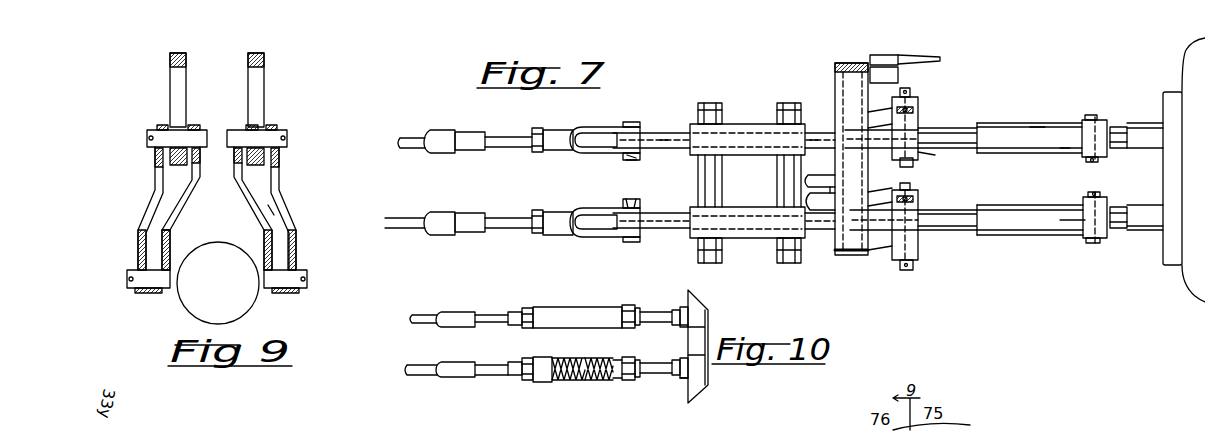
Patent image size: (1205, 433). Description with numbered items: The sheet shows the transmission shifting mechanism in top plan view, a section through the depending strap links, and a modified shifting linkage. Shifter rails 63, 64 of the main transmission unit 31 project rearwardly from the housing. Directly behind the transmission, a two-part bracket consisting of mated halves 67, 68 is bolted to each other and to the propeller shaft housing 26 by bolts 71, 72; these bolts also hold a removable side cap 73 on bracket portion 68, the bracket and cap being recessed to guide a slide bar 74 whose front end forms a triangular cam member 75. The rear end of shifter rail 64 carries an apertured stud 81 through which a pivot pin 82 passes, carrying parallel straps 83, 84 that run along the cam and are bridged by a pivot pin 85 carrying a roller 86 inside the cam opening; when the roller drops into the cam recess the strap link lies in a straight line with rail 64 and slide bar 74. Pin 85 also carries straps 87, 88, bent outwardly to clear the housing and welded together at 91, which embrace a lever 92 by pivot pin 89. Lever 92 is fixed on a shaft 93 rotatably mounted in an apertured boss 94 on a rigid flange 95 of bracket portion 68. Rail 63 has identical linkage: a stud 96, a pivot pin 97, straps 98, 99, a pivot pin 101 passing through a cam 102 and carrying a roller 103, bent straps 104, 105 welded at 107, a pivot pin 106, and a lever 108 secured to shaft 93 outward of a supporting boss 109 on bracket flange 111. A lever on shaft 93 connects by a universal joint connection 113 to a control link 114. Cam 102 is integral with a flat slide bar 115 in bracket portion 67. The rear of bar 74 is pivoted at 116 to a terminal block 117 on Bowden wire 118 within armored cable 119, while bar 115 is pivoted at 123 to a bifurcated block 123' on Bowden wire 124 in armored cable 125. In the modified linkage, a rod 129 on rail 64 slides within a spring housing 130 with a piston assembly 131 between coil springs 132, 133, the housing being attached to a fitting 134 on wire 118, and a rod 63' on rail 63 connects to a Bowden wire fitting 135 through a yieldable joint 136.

In FIG. 9, the propeller shaft housing 26 is at (240, 317).
In FIG. 7, the main transmission unit 31 is at (1192, 283).
In FIG. 10, the main transmission unit 31 is at (700, 392).
In FIG. 7, the shifter rail 63 is at (1136, 126).
In FIG. 10, the shifter rail 63 is at (674, 338).
In FIG. 10, the rearwardly projecting rod 63' is at (664, 303).
In FIG. 7, the shifter rail 64 is at (1152, 230).
In FIG. 10, the shifter rail 64 is at (684, 380).
In FIG. 7, the bracket half 67 is at (697, 165).
In FIG. 7, the bracket half 68 is at (697, 205).
In FIG. 7, the bolt 71 is at (710, 263).
In FIG. 7, the bolt 72 is at (790, 263).
In FIG. 7, the removable side cap 73 is at (752, 238).
In FIG. 7, the slide bar 74 is at (818, 231).
In FIG. 9, the cam member 75 is at (186, 62).
In FIG. 7, the cam member 75 is at (978, 214).
In FIG. 7, the apertured stud 81 is at (1080, 220).
In FIG. 7, the pivot pin 82 is at (1102, 196).
In FIG. 9, the strap 83 is at (182, 132).
In FIG. 7, the strap 83 is at (1034, 210).
In FIG. 9, the strap 84 is at (160, 125).
In FIG. 7, the strap 84 is at (1028, 235).
In FIG. 9, the pivot pin 85 is at (150, 144).
In FIG. 7, the pivot pin 85 is at (918, 262).
In FIG. 9, the roller 86 is at (192, 125).
In FIG. 7, the roller 86 is at (916, 200).
In FIG. 9, the strap 87 is at (155, 190).
In FIG. 7, the strap 87 is at (918, 248).
In FIG. 9, the strap 88 is at (193, 197).
In FIG. 7, the strap 88 is at (912, 190).
In FIG. 9, the pivot pin 89 is at (130, 278).
In FIG. 9, the weld 91 is at (165, 222).
In FIG. 9, the lever 92 is at (153, 293).
In FIG. 7, the lever 92 is at (888, 255).
In FIG. 7, the shaft 93 is at (856, 255).
In FIG. 7, the apertured boss 94 is at (898, 190).
In FIG. 7, the rigid flange 95 is at (822, 193).
In FIG. 7, the apertured stud 96 is at (1100, 154).
In FIG. 7, the pivot pin 97 is at (1098, 108).
In FIG. 9, the strap 98 is at (275, 125).
In FIG. 7, the strap 98 is at (1038, 125).
In FIG. 9, the strap 99 is at (248, 125).
In FIG. 7, the strap 99 is at (1065, 152).
In FIG. 9, the pivot pin 101 is at (284, 141).
In FIG. 7, the pivot pin 101 is at (918, 110).
In FIG. 9, the cam 102 is at (272, 48).
In FIG. 7, the cam 102 is at (975, 128).
In FIG. 9, the roller 103 is at (258, 132).
In FIG. 7, the roller 103 is at (920, 141).
In FIG. 9, the strap 104 is at (280, 180).
In FIG. 7, the strap 104 is at (918, 115).
In FIG. 9, the strap 105 is at (248, 187).
In FIG. 7, the strap 105 is at (922, 160).
In FIG. 9, the pivot pin 106 is at (307, 279).
In FIG. 7, the pivot pin 106 is at (908, 88).
In FIG. 9, the weld 107 is at (274, 205).
In FIG. 9, the lever 108 is at (288, 293).
In FIG. 7, the lever 108 is at (888, 112).
In FIG. 7, the supporting boss 109 is at (868, 160).
In FIG. 7, the bracket flange 111 is at (826, 175).
In FIG. 7, the universal joint connection 113 is at (876, 55).
In FIG. 7, the control link 114 is at (915, 57).
In FIG. 7, the flat slide bar 115 is at (665, 138).
In FIG. 7, the pivotal connection 116 is at (630, 243).
In FIG. 7, the terminal block 117 is at (595, 237).
In FIG. 7, the Bowden wire 118 is at (407, 226).
In FIG. 10, the Bowden wire 118 is at (408, 370).
In FIG. 7, the armored cable 119 is at (450, 232).
In FIG. 10, the armored cable 119 is at (468, 377).
In FIG. 7, the pivotal connection 123 is at (640, 128).
In FIG. 7, the bifurcated block 123' is at (601, 128).
In FIG. 7, the Bowden wire 124 is at (412, 143).
In FIG. 10, the Bowden wire 124 is at (420, 316).
In FIG. 7, the armored cable 125 is at (448, 150).
In FIG. 10, the armored cable 125 is at (462, 328).
In FIG. 10, the rearwardly projecting rod 129 is at (660, 375).
In FIG. 10, the spring housing 130 is at (545, 382).
In FIG. 10, the piston or washer assembly 131 is at (592, 380).
In FIG. 10, the coil spring 132 is at (626, 358).
In FIG. 10, the coil spring 133 is at (566, 358).
In FIG. 10, the fitting 134 is at (492, 375).
In FIG. 10, the Bowden wire fitting 135 is at (512, 312).
In FIG. 10, the yieldable joint 136 is at (490, 322).